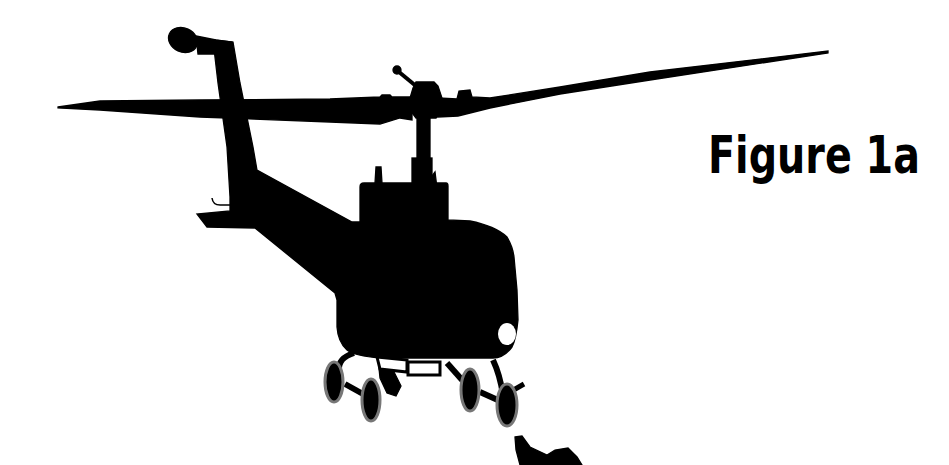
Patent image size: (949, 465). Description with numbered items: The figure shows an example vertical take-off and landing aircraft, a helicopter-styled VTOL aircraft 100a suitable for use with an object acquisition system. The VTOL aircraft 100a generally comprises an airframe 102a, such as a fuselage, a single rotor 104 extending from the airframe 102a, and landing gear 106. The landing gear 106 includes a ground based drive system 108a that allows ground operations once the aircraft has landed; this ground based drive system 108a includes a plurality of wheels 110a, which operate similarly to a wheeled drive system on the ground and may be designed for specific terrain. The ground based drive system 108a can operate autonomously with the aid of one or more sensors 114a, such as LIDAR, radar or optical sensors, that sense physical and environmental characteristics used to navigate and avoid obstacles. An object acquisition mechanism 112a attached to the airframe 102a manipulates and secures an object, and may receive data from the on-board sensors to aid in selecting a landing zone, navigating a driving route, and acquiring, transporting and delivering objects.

The VTOL aircraft 100a is at (429, 244).
The airframe 102a is at (313, 283).
The rotor 104 is at (632, 86).
The landing gear 106 is at (498, 370).
The ground based drive system 108a is at (320, 390).
The wheels 110a is at (360, 413).
The object acquisition mechanism 112a is at (420, 376).
The sensors 114a is at (512, 338).